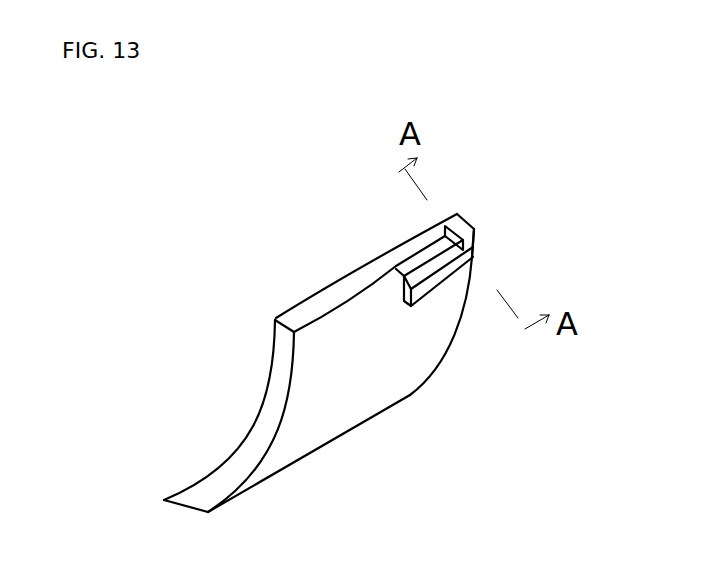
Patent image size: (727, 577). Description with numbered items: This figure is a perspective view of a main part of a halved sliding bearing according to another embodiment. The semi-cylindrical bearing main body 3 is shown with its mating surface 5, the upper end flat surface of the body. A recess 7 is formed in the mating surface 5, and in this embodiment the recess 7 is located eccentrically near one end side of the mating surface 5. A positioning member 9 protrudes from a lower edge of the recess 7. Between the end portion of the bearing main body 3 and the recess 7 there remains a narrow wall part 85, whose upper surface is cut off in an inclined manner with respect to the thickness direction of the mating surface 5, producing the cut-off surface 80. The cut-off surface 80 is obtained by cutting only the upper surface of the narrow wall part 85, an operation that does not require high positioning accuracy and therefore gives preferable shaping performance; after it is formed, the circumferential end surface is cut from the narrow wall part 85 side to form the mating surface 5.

The bearing main body 3 is at (333, 418).
The mating surface 5 is at (330, 298).
The recess 7 is at (417, 272).
The positioning member 9 is at (448, 277).
The cut-off surface 80 is at (467, 231).
The narrow wall part 85 is at (474, 243).